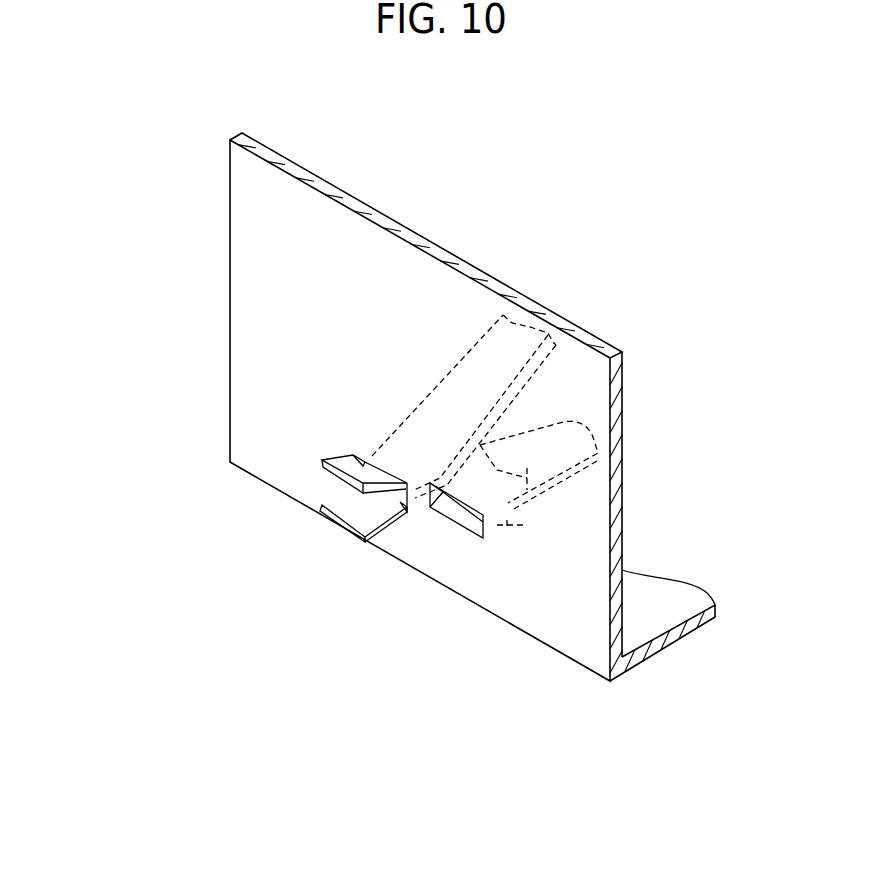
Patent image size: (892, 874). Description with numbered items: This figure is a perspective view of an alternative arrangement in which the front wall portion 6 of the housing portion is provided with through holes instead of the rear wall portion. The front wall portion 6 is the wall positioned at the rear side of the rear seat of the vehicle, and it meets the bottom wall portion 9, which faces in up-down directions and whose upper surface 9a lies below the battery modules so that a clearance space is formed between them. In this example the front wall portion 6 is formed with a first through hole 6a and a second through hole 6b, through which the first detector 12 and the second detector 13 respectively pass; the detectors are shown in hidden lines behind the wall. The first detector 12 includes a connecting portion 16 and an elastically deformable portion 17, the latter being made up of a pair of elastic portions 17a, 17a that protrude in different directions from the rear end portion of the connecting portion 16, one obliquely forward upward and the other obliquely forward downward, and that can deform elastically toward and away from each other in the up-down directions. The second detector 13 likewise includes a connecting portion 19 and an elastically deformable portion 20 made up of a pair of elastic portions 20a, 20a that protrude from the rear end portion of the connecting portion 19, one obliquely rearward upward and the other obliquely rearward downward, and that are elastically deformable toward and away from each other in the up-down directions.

The front wall portion 6 is at (244, 194).
The first through hole 6a is at (433, 517).
The second through hole 6b is at (398, 509).
The bottom wall portion 9 is at (645, 587).
The upper surface of the bottom wall portion 9a is at (675, 593).
The first detector 12 is at (550, 493).
The second detector 13 is at (450, 378).
The connecting portion 16 is at (565, 480).
The elastically deformable portion 17 is at (503, 513).
The elastic portion 17a is at (480, 445).
The connecting portion 19 is at (438, 388).
The elastically deformable portion 20 is at (321, 461).
The elastic portion 20a is at (321, 470).